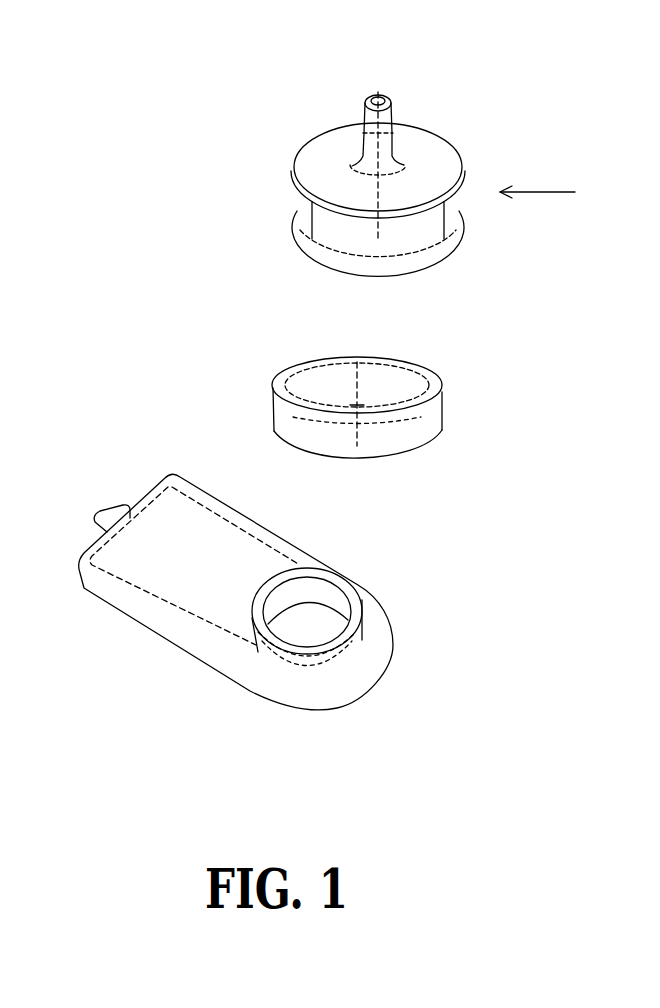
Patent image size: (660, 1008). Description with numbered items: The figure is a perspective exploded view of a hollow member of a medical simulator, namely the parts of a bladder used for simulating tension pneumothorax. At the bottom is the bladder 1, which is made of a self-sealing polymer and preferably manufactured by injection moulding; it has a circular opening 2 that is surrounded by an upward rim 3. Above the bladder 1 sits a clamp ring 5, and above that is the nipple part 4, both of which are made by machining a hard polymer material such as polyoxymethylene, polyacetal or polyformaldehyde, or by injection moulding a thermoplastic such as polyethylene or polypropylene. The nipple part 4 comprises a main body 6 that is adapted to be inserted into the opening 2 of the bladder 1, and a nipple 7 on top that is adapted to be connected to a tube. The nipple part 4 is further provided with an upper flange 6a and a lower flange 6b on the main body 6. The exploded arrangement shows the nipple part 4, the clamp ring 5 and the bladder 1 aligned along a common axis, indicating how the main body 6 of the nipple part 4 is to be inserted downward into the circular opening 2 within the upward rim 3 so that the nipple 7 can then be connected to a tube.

The bladder 1 is at (205, 577).
The circular opening 2 is at (303, 608).
The upward rim 3 is at (361, 661).
The nipple part 4 is at (552, 205).
The clamp ring 5 is at (395, 432).
The main body 6 is at (364, 172).
The upper flange 6a is at (297, 153).
The lower flange 6b is at (443, 247).
The nipple 7 is at (390, 95).